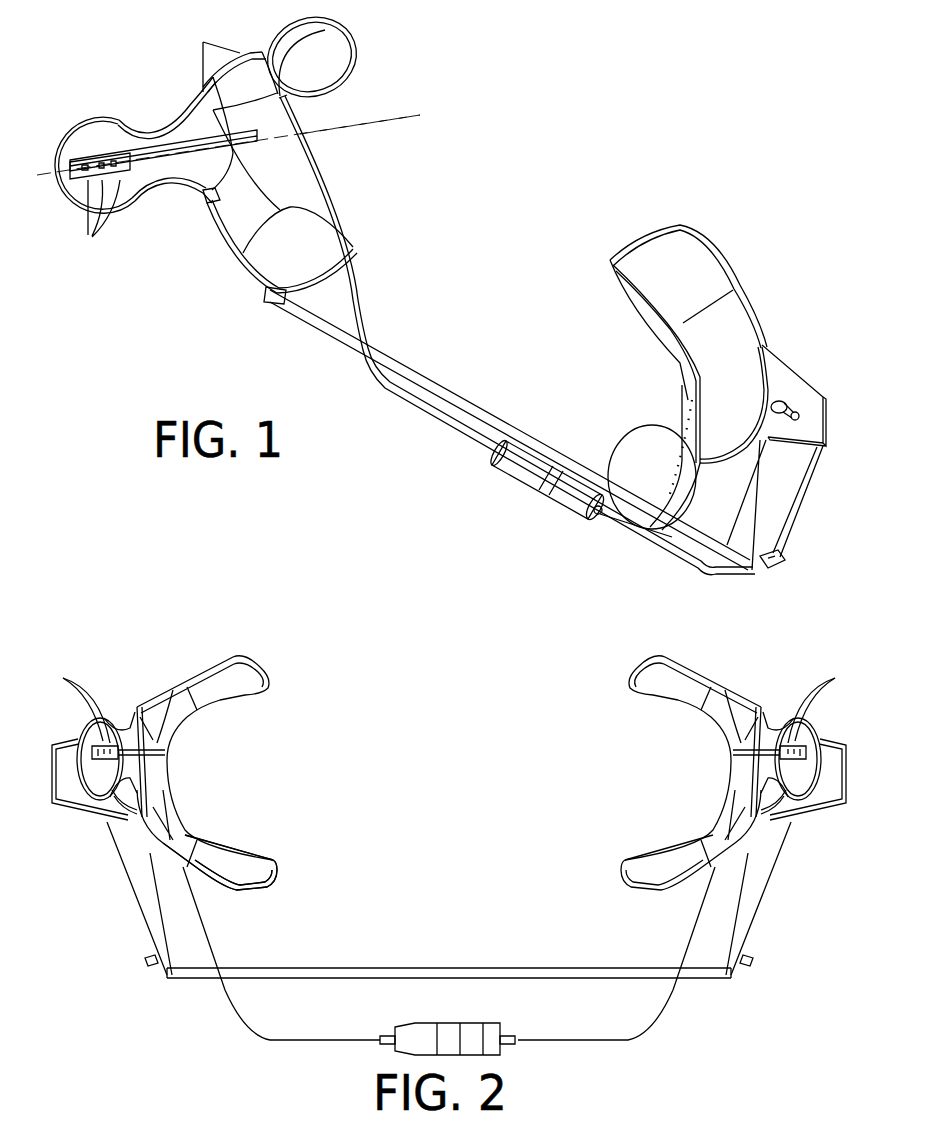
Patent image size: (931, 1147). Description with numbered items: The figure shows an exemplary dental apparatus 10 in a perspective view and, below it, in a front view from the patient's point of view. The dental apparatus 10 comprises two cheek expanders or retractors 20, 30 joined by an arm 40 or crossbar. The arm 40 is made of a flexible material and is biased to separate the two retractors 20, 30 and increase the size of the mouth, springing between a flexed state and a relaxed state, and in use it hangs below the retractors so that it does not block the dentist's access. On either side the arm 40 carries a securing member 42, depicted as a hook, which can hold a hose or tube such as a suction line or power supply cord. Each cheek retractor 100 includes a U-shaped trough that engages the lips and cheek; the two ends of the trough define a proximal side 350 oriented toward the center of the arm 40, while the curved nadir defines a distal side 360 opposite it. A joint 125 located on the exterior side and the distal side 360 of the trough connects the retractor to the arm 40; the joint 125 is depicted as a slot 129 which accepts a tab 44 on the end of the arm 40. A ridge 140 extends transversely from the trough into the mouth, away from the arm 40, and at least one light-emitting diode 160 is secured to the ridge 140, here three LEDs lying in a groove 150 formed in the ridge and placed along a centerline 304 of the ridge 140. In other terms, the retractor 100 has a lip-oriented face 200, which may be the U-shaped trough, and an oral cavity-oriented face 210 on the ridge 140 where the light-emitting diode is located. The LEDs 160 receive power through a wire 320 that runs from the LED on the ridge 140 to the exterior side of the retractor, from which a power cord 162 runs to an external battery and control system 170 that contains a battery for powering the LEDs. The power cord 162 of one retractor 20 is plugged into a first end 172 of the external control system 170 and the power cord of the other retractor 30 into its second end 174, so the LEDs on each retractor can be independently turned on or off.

In FIG. 1, the dental apparatus 10 is at (527, 180).
In FIG. 2, the dental apparatus 10 is at (417, 686).
In FIG. 1, the cheek retractor 20 is at (375, 50).
In FIG. 2, the cheek retractor 20 is at (275, 658).
In FIG. 1, the cheek retractor 30 is at (677, 216).
In FIG. 2, the cheek retractor 30 is at (633, 648).
In FIG. 1, the arm 40 is at (420, 360).
In FIG. 2, the arm 40 is at (403, 960).
In FIG. 1, the securing member 42 is at (775, 566).
In FIG. 2, the securing member 42 is at (150, 963).
In FIG. 1, the tab 44 is at (780, 413).
In FIG. 2, the cheek retractor 100 is at (282, 704).
In FIG. 1, the joint 125 is at (778, 357).
In FIG. 1, the slot 129 is at (800, 400).
In FIG. 2, the ridge 140 is at (118, 797).
In FIG. 1, the groove 150 is at (186, 190).
In FIG. 1, the light-emitting diode 160 is at (90, 240).
In FIG. 2, the light-emitting diode 160 is at (66, 682).
In FIG. 1, the power cord 162 is at (323, 175).
In FIG. 1, the external battery and control system 170 is at (506, 484).
In FIG. 1, the first end 172 is at (488, 452).
In FIG. 1, the second end 174 is at (590, 520).
In FIG. 2, the lip-oriented face 200 is at (225, 633).
In FIG. 2, the oral cavity-oriented face 210 is at (130, 745).
In FIG. 1, the centerline 304 is at (380, 117).
In FIG. 1, the wire 320 is at (186, 155).
In FIG. 2, the proximal side 350 is at (282, 872).
In FIG. 2, the distal side 360 is at (53, 783).